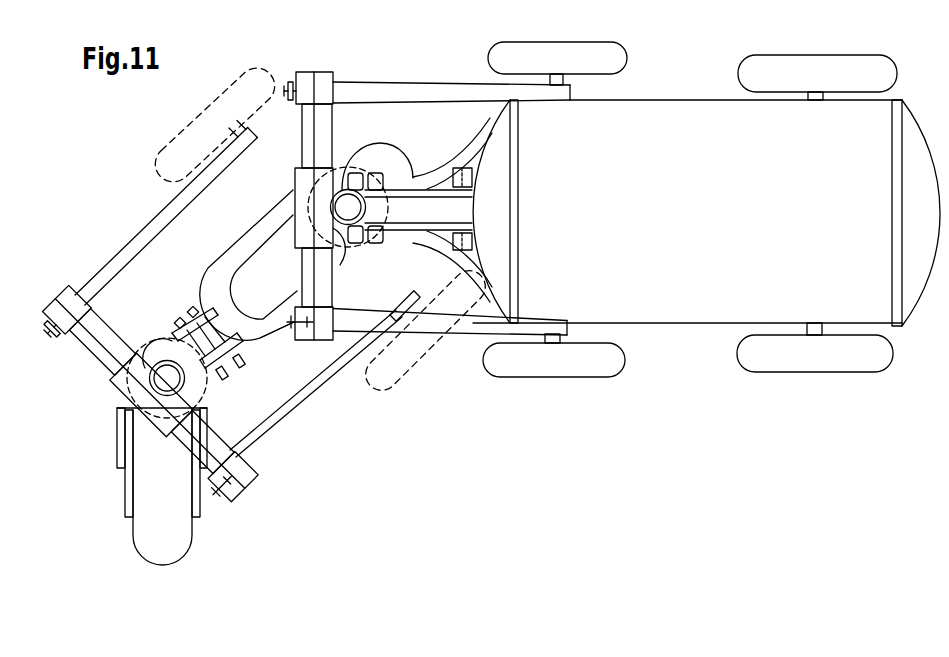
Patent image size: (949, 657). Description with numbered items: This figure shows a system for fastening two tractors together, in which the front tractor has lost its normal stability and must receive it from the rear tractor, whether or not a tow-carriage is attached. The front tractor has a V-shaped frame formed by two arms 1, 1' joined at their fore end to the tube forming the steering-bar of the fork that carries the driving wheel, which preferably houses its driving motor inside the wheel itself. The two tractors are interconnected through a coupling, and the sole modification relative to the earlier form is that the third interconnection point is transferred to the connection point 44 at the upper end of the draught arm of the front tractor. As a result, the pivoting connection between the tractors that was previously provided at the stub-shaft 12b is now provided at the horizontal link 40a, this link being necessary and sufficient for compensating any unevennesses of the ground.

The arm 1 is at (316, 383).
The arm 1' is at (166, 217).
The stub-shaft 12b is at (191, 309).
The horizontal link 40a is at (362, 266).
The connection point 44 is at (176, 321).